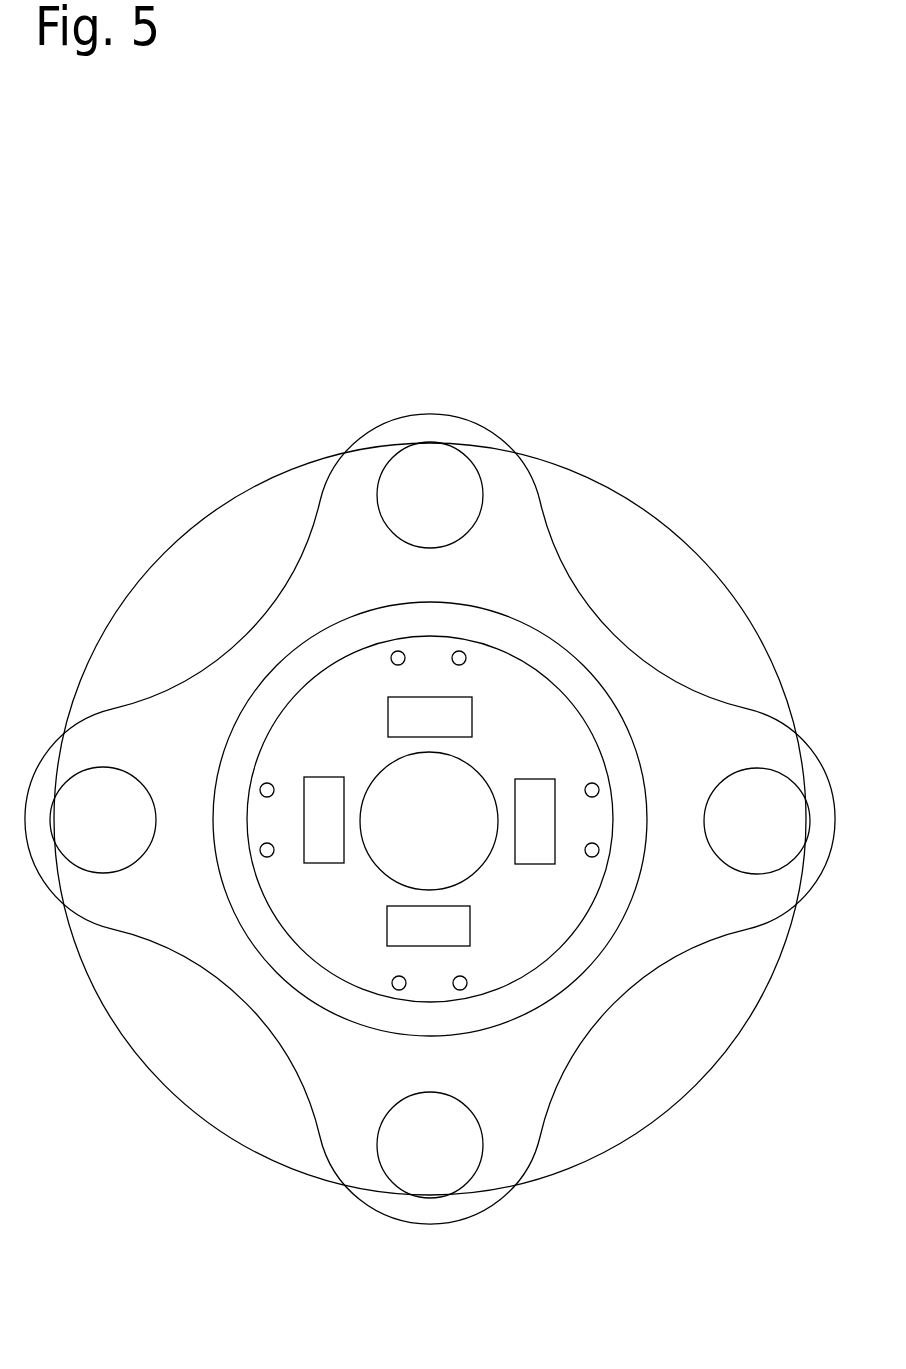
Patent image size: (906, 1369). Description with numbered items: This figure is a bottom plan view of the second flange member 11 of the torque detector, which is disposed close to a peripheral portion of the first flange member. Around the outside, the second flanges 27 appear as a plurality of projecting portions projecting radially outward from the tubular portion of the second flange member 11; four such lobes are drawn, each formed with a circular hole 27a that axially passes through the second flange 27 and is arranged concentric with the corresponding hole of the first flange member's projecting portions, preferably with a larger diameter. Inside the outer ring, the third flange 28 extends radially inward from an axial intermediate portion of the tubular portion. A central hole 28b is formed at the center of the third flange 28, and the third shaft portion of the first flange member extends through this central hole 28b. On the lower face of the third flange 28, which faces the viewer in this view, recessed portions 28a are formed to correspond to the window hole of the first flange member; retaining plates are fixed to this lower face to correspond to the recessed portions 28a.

The second flange member 11 is at (535, 366).
The second flanges 27 is at (505, 460).
The holes 27a is at (393, 467).
The third flange 28 is at (327, 703).
The recessed portions 28a is at (453, 715).
The central hole 28b is at (403, 758).